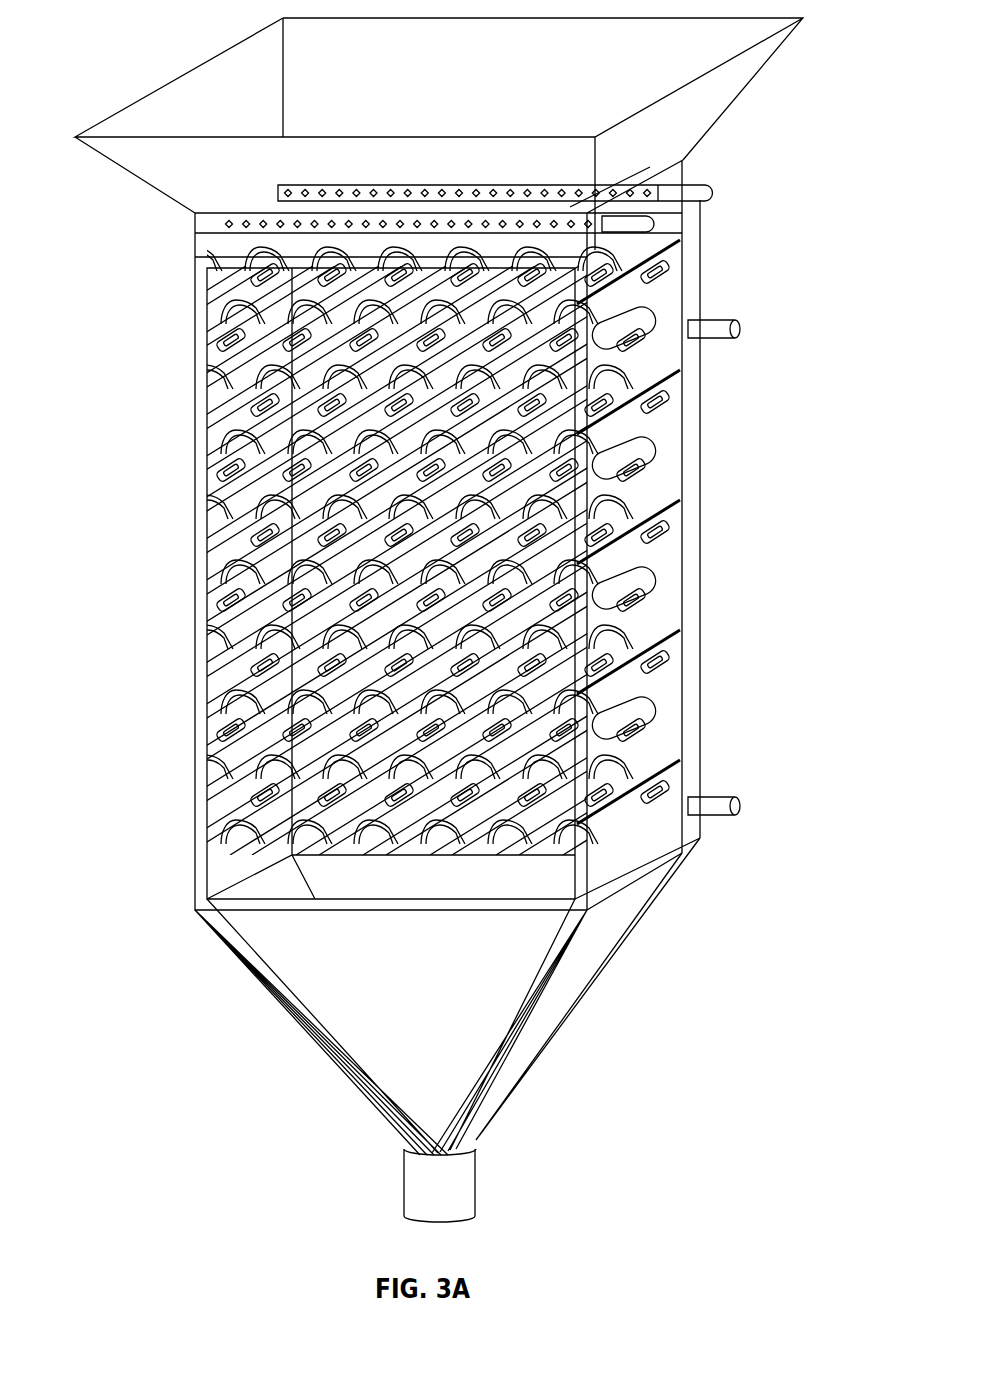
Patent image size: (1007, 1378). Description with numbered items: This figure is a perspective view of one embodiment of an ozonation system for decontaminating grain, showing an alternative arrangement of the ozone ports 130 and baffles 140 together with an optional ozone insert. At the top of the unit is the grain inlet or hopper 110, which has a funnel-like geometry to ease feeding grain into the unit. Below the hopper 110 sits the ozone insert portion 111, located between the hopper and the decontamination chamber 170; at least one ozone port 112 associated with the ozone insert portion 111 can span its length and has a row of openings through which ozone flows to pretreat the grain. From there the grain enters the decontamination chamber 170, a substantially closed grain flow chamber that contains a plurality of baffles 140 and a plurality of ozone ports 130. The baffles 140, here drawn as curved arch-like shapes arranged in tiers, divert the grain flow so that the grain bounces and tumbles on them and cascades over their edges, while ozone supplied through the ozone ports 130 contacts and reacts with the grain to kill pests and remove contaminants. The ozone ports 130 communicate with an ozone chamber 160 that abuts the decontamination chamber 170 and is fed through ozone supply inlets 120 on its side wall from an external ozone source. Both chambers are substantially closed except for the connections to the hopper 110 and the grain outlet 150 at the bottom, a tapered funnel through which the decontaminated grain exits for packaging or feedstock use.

The grain inlet/hopper 110 is at (717, 90).
The ozone insert portion 111 is at (202, 240).
The ozone port 112 is at (652, 230).
The ozone supply inlet 120 is at (727, 320).
The ozone port 130 is at (318, 537).
The baffle 140 is at (243, 692).
The grain outlet 150 is at (449, 1175).
The ozone chamber 160 is at (692, 380).
The decontamination chamber 170 is at (662, 482).